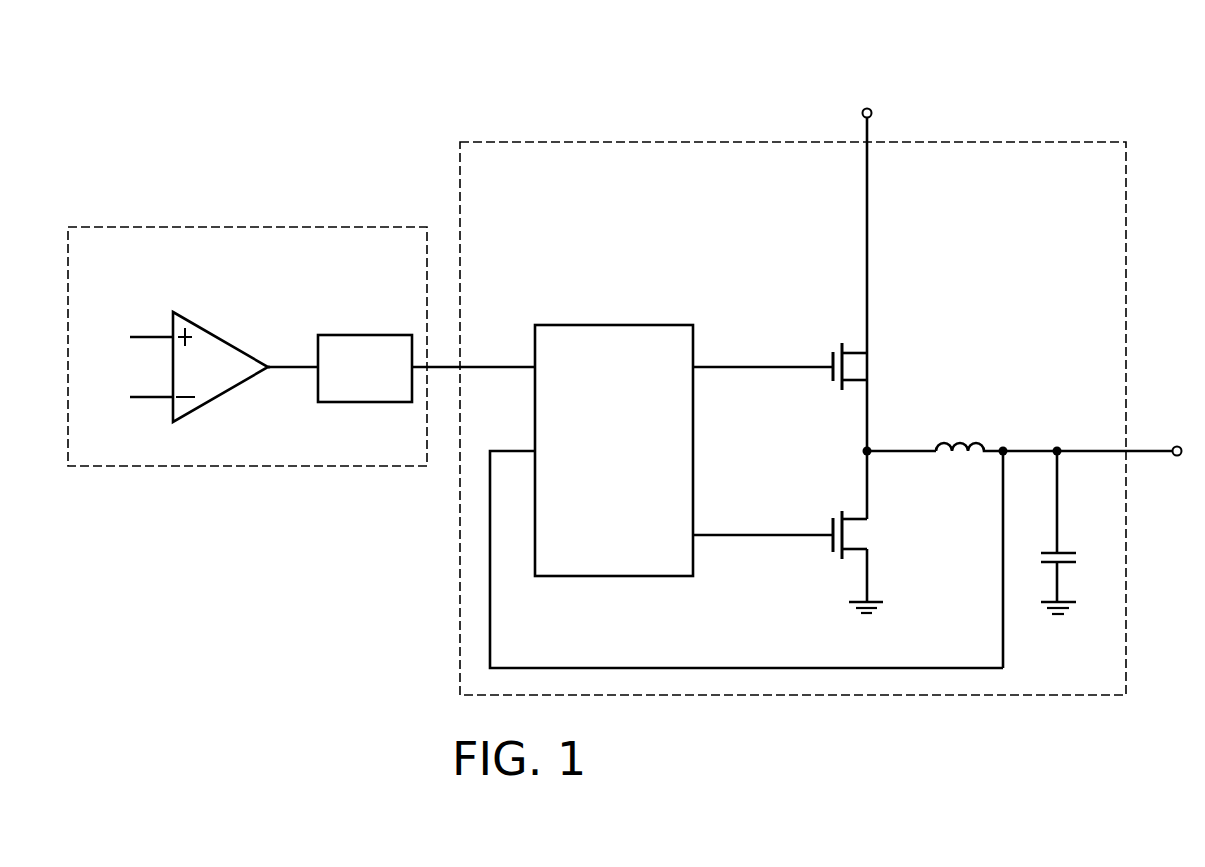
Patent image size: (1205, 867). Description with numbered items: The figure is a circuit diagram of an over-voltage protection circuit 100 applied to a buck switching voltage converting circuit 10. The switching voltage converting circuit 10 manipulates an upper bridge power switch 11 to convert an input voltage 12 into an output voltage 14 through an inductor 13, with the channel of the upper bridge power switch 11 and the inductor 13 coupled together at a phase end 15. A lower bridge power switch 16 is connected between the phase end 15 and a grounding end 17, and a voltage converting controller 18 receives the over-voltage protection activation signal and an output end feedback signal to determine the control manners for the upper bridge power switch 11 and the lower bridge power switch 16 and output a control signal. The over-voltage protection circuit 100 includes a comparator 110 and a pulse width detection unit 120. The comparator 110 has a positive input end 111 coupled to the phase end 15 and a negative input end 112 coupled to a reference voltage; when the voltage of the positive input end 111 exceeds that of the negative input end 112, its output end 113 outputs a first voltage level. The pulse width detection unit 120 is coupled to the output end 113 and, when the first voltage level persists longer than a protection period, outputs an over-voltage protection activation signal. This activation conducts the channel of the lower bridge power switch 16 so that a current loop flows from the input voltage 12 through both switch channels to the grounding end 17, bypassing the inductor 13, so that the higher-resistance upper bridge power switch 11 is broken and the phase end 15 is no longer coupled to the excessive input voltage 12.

The switching voltage converting circuit 10 is at (501, 183).
The upper bridge power switch 11 is at (870, 355).
The input voltage 12 is at (867, 108).
The inductor 13 is at (959, 436).
The output voltage 14 is at (1177, 445).
The phase end 15 is at (870, 455).
The lower bridge power switch 16 is at (862, 520).
The grounding end 17 is at (882, 606).
The voltage converting controller 18 is at (628, 467).
The over-voltage protection circuit 100 is at (129, 267).
The comparator 110 is at (230, 382).
The positive input end 111 is at (173, 335).
The negative input end 112 is at (173, 400).
The output end 113 is at (270, 365).
The pulse width detection unit 120 is at (387, 385).